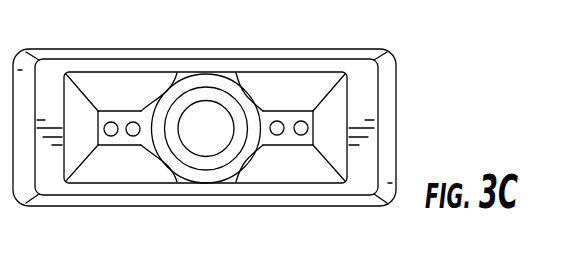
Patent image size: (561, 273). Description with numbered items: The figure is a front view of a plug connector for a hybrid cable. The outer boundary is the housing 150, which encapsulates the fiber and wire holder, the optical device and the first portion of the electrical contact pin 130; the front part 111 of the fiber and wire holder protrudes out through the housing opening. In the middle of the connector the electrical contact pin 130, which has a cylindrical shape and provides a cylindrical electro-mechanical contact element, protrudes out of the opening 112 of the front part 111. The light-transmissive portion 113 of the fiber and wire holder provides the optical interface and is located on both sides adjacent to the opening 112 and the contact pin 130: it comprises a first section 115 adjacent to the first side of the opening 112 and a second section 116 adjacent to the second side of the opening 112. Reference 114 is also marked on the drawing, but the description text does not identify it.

The front part of the fiber and wire holder 111 is at (103, 168).
The opening of the front part 112 is at (205, 160).
The light-transmissive portion 113 is at (286, 140).
The second side portion of mounting plate 114 is at (335, 143).
The first section 115 is at (117, 110).
The second section 116 is at (277, 120).
The electrical contact pin 130 is at (208, 118).
The housing 150 is at (383, 53).